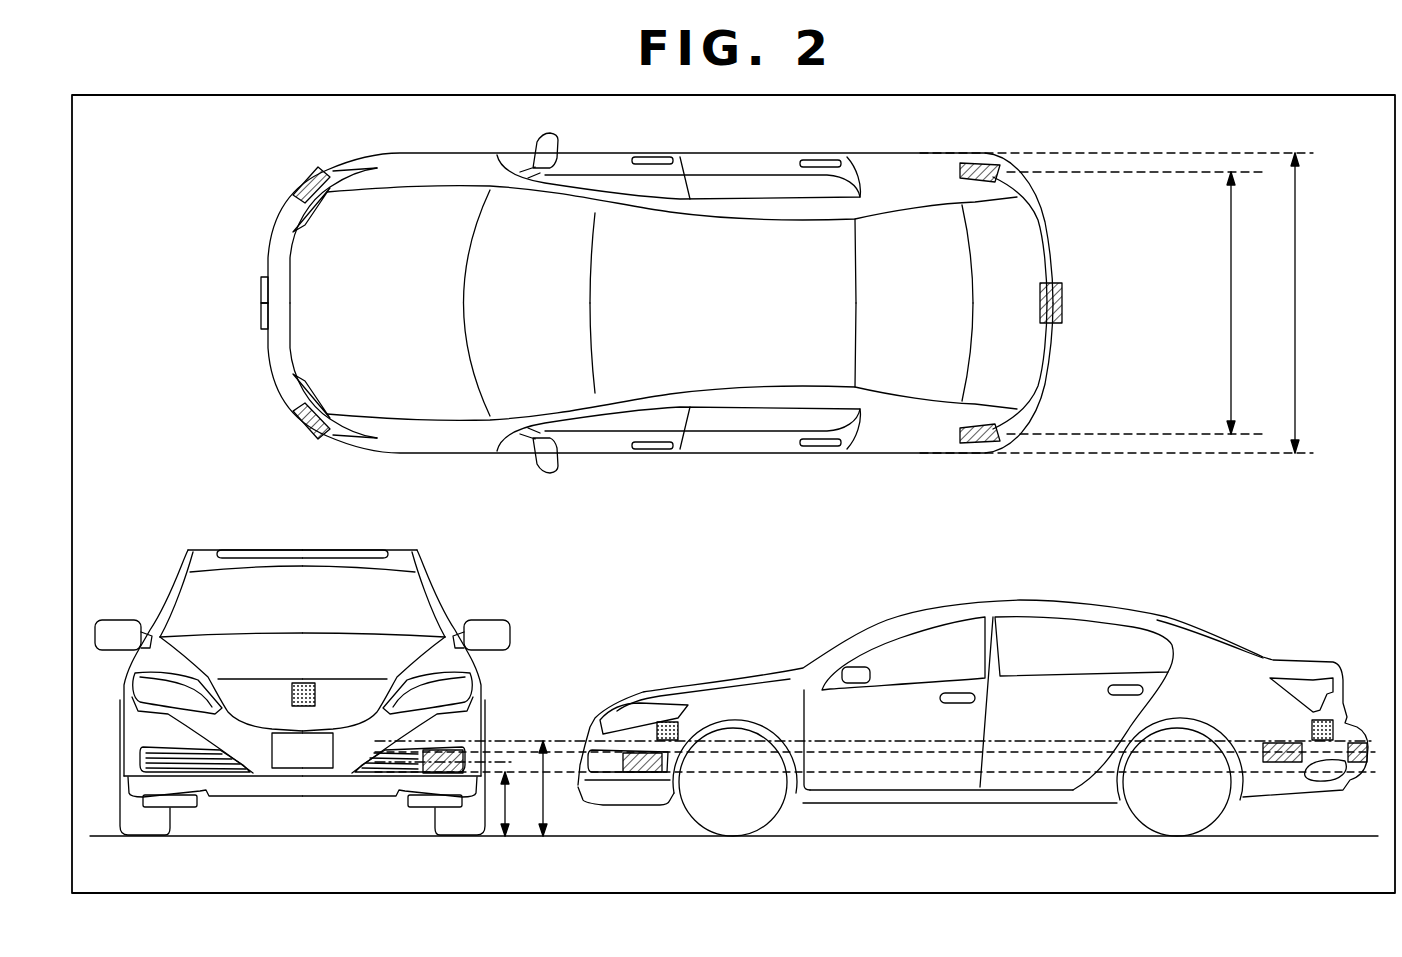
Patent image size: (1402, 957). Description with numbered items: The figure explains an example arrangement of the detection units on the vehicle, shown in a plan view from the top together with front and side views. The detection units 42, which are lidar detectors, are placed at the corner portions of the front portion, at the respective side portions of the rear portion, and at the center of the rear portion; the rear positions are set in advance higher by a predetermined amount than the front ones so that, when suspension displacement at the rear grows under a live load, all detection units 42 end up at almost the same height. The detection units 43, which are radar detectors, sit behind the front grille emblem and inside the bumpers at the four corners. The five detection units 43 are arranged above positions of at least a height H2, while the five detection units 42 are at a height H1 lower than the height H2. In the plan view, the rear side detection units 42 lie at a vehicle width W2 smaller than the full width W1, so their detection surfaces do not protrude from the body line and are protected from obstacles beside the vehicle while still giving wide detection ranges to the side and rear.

The detection unit (lidar detector) 42 is at (305, 180).
The detection unit (radar detector) 43 is at (663, 720).
The full width W1 is at (1313, 303).
The vehicle width W2 is at (1249, 303).
The height H1 is at (517, 804).
The height H2 is at (556, 788).